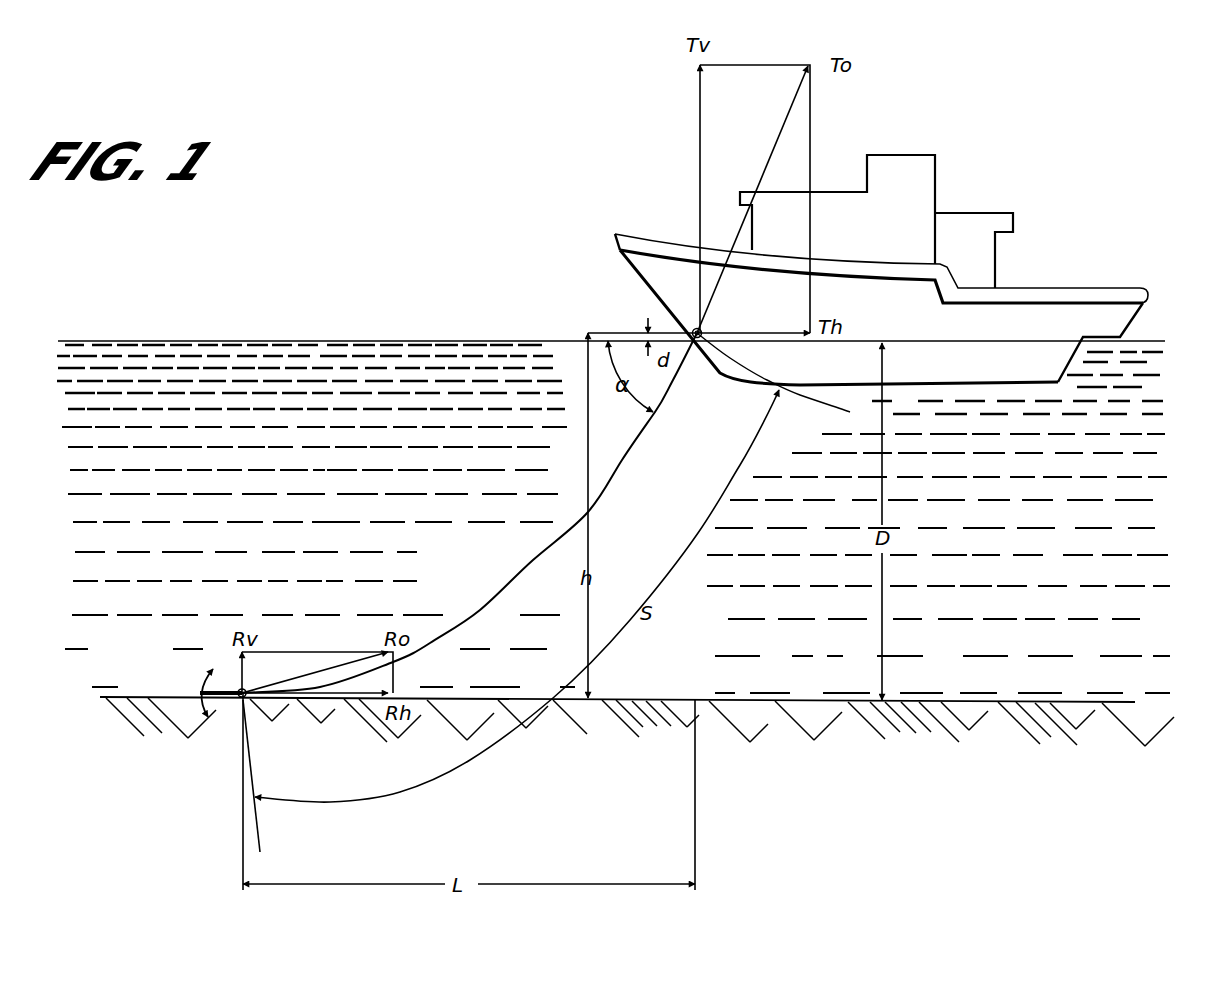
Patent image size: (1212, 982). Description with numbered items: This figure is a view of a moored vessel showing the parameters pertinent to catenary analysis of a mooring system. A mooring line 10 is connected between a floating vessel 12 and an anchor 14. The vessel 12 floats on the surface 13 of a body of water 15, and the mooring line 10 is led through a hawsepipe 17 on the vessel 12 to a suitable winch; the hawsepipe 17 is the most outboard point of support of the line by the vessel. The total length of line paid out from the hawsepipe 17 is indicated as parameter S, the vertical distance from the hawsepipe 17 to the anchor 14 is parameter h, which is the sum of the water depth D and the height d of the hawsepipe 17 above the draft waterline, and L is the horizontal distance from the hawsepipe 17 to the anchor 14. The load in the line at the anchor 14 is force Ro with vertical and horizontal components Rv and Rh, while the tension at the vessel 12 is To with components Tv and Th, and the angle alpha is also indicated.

The mooring line 10 is at (553, 556).
The vessel 12 is at (975, 213).
The surface 13 is at (296, 340).
The anchor 14 is at (210, 668).
The body of water 15 is at (305, 550).
The hawsepipe 17 is at (692, 330).